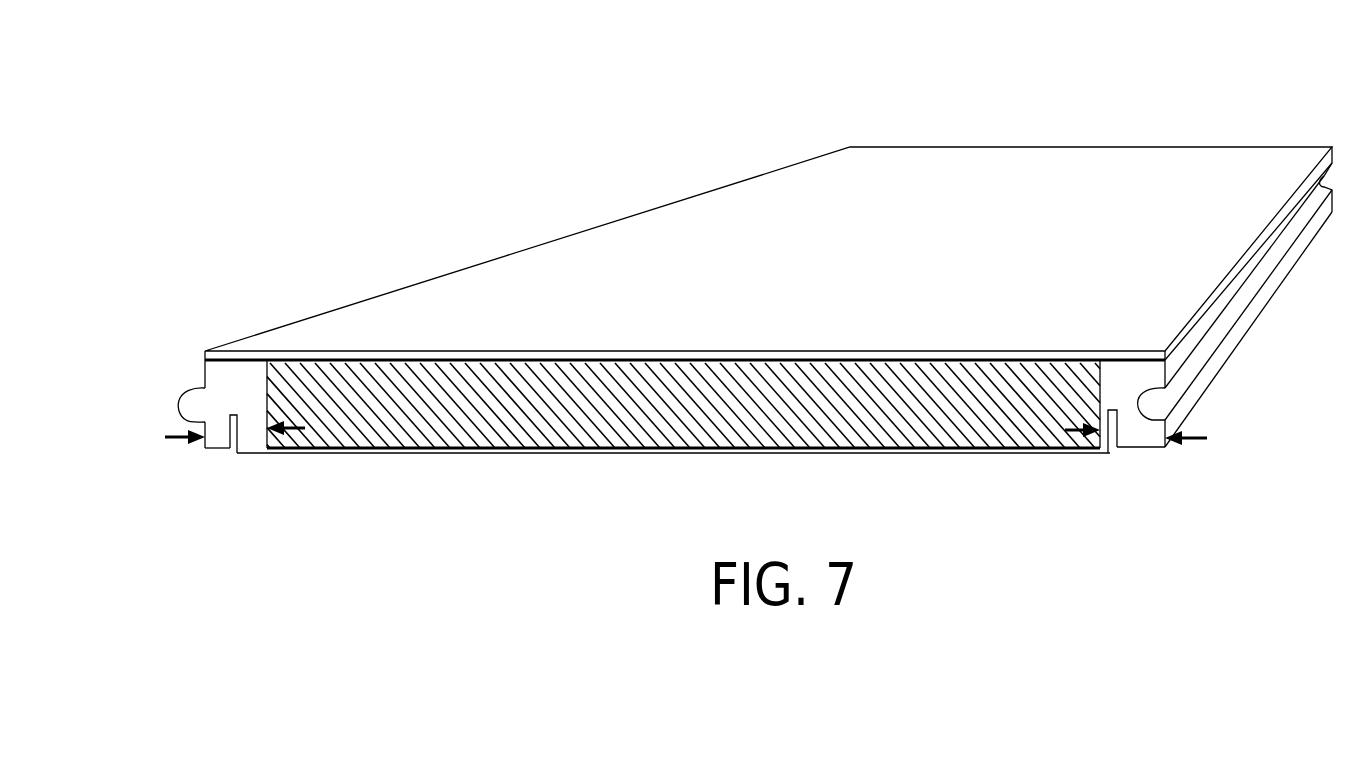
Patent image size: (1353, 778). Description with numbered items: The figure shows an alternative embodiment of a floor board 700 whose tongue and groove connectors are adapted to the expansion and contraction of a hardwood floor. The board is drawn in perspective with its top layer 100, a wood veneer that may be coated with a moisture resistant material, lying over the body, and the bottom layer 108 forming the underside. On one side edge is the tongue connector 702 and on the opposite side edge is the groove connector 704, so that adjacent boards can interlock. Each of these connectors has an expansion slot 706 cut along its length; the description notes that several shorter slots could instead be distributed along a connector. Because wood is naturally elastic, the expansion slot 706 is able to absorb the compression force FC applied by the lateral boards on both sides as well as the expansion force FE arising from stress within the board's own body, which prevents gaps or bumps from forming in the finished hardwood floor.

The floor board 700 is at (514, 145).
The top layer 100 is at (867, 268).
The bottom layer 108 is at (818, 453).
The tongue connector 702 is at (251, 437).
The groove connector 704 is at (1132, 442).
The expansion slot 706 is at (233, 455).